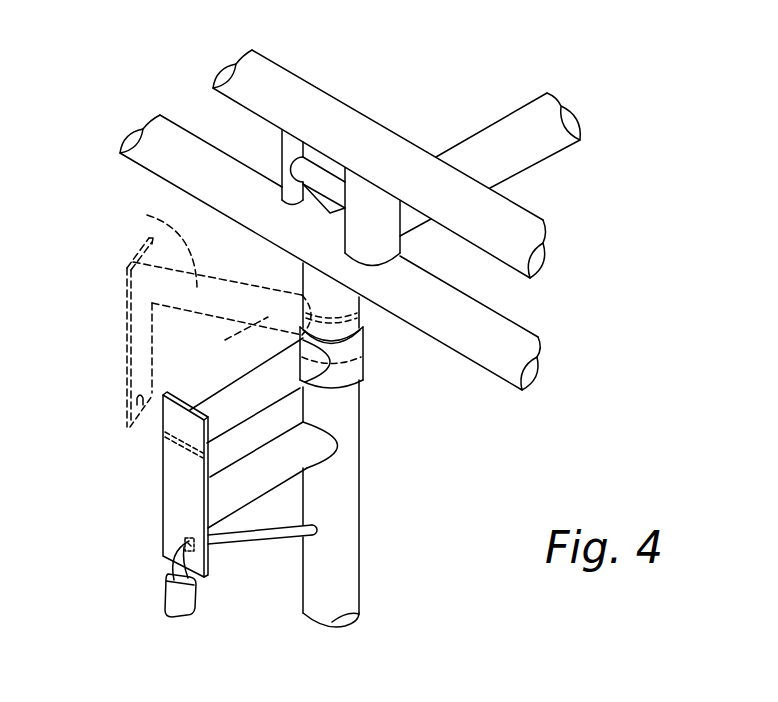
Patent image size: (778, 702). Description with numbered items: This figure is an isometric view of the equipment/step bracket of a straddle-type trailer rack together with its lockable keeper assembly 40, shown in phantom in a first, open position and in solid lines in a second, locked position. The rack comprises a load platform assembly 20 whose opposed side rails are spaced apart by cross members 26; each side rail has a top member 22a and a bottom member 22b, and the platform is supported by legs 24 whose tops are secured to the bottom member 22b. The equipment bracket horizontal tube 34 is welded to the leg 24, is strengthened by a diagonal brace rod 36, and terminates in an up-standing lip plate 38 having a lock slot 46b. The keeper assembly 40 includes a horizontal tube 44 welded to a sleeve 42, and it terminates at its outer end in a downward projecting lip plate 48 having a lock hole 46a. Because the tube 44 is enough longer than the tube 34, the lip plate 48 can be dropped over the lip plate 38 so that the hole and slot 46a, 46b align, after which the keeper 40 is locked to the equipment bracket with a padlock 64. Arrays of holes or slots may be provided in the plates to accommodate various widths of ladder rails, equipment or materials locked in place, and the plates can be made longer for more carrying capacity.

The load platform assembly 20 is at (316, 73).
The top member 22a is at (527, 227).
The bottom member 22b is at (525, 345).
The leg 24 is at (343, 582).
The cross member 26 is at (514, 130).
The equipment bracket horizontal tube 34 is at (320, 452).
The diagonal brace rod 36 is at (262, 537).
The lip plate 38 is at (213, 483).
The keeper assembly 40 is at (270, 376).
The sleeve 42 is at (357, 363).
The horizontal tube 44 is at (147, 215).
The lock hole 46a is at (140, 400).
The lock slot 46b is at (187, 542).
The lip plate 48 is at (140, 328).
The padlock 64 is at (170, 605).